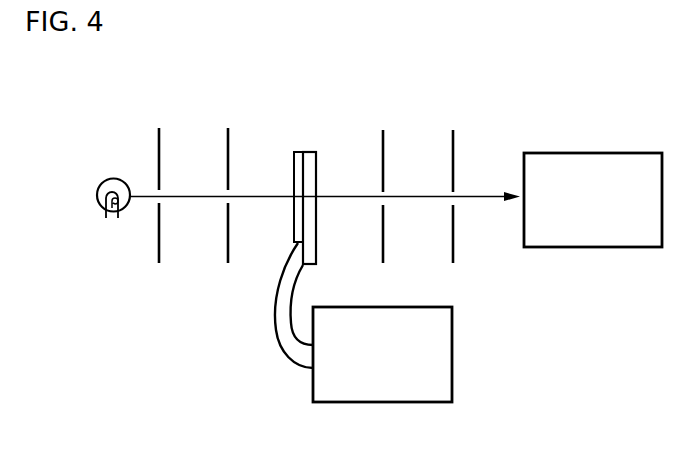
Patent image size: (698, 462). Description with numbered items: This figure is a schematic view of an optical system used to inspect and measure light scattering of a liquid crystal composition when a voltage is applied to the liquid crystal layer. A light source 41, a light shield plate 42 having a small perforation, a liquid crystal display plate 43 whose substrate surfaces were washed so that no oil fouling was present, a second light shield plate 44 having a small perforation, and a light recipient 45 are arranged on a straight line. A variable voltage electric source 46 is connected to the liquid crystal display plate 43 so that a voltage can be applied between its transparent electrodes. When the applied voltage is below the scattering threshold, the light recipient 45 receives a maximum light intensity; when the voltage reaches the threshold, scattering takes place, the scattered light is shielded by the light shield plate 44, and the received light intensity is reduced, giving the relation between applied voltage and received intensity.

The light source 41 is at (113, 178).
The light shield plate 42 is at (233, 120).
The liquid crystal display plate 43 is at (309, 152).
The light shield plate 44 is at (457, 120).
The light recipient 45 is at (577, 152).
The variable voltage electric source 46 is at (395, 307).